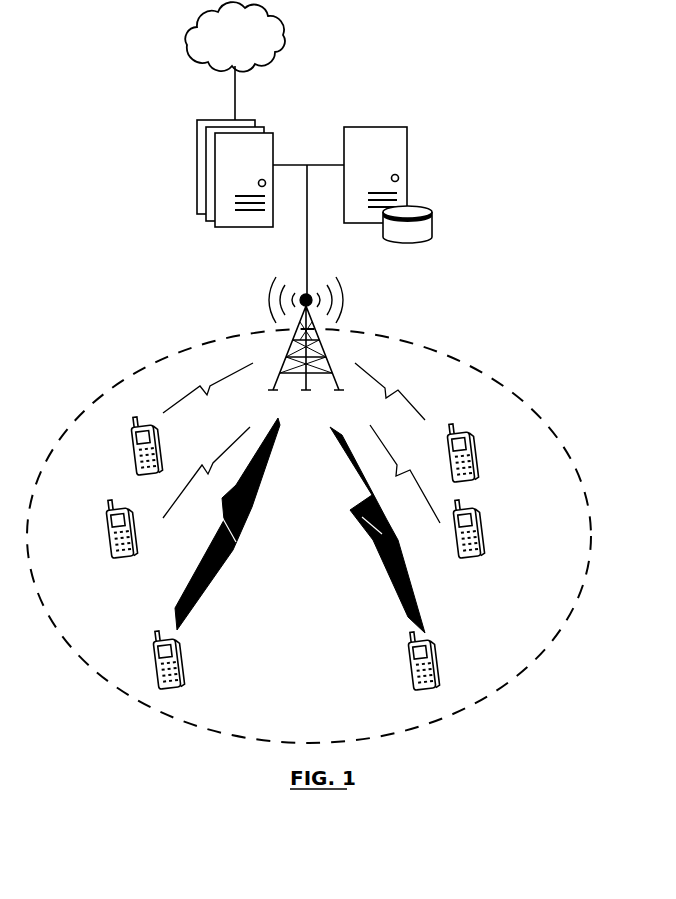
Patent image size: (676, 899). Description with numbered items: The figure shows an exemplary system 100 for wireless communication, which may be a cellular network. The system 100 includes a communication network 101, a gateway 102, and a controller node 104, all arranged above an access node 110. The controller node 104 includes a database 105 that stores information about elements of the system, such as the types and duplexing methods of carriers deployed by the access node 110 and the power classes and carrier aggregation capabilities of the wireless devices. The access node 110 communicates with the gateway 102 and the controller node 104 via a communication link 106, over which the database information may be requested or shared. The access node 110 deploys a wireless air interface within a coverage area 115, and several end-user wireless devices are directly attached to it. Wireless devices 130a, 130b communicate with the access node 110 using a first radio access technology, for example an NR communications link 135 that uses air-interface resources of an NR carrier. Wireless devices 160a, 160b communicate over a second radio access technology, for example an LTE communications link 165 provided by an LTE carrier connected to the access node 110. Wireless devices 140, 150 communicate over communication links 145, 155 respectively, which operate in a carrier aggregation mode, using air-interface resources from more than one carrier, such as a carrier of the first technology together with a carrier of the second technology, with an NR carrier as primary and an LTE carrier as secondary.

The system 100 is at (340, 64).
The communication network 101 is at (220, 46).
The gateway 102 is at (200, 120).
The controller node 104 is at (407, 125).
The database 105 is at (430, 208).
The communication link 106 is at (307, 243).
The access node 110 is at (292, 357).
The coverage area 115 is at (366, 326).
The end-user wireless device 130a is at (133, 463).
The end-user wireless device 130b is at (122, 558).
The NR communications link 135 is at (187, 394).
The end-user wireless device 140 is at (153, 677).
The communication link 145 is at (249, 507).
The end-user wireless device 150 is at (437, 680).
The communication link 155 is at (372, 545).
The end-user wireless device 160a is at (477, 472).
The end-user wireless device 160b is at (491, 531).
The LTE communications link 165 is at (385, 390).